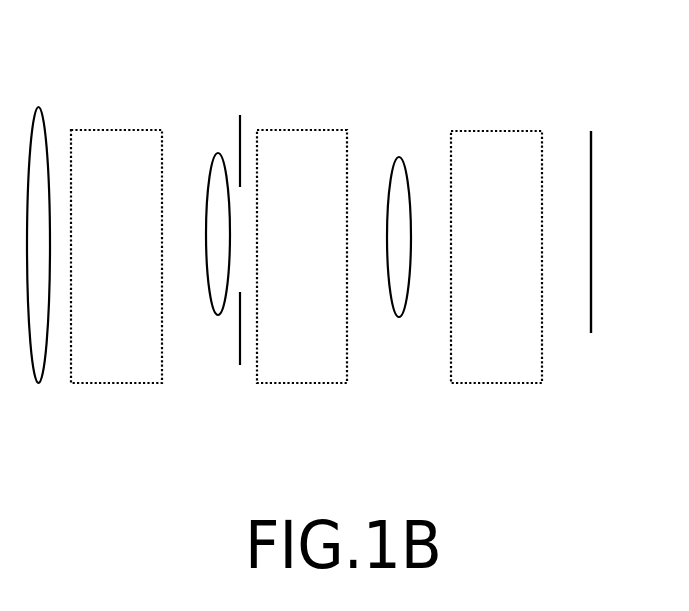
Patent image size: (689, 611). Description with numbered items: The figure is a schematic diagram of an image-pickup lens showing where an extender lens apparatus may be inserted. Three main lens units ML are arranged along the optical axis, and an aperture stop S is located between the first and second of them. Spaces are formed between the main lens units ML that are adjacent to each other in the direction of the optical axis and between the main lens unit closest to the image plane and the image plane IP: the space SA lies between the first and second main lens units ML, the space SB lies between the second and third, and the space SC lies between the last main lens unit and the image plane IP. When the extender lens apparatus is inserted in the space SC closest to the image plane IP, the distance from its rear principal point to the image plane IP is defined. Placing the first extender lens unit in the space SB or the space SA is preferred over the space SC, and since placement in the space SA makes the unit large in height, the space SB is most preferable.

The main lens units ML is at (386, 130).
The aperture stop S is at (238, 140).
The space SA is at (116, 256).
The space SB is at (302, 256).
The space SC is at (496, 257).
The image plane IP is at (595, 209).